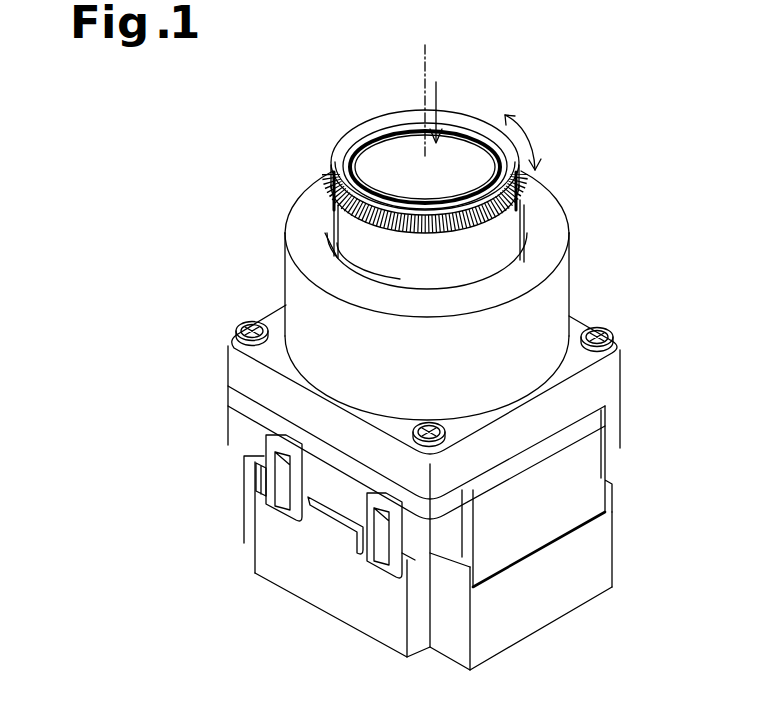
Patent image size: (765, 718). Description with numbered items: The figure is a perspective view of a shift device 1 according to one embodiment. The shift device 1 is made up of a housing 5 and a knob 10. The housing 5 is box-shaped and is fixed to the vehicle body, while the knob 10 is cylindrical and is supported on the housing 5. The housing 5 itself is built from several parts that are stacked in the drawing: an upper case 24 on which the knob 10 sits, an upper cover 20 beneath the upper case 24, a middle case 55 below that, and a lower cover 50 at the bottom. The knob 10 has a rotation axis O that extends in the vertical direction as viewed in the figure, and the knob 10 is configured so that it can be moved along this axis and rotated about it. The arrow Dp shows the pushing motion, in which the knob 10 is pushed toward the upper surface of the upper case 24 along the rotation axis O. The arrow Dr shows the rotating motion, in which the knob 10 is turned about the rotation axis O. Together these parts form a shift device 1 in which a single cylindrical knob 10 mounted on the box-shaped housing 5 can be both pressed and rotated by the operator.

The shift device 1 is at (617, 150).
The housing 5 is at (684, 290).
The knob 10 is at (513, 215).
The upper cover 20 is at (617, 404).
The upper case 24 is at (557, 299).
The lower cover 50 is at (603, 543).
The middle case 55 is at (600, 478).
The rotation axis O is at (425, 73).
The arrow Dp is at (440, 95).
The arrow Dr is at (528, 132).